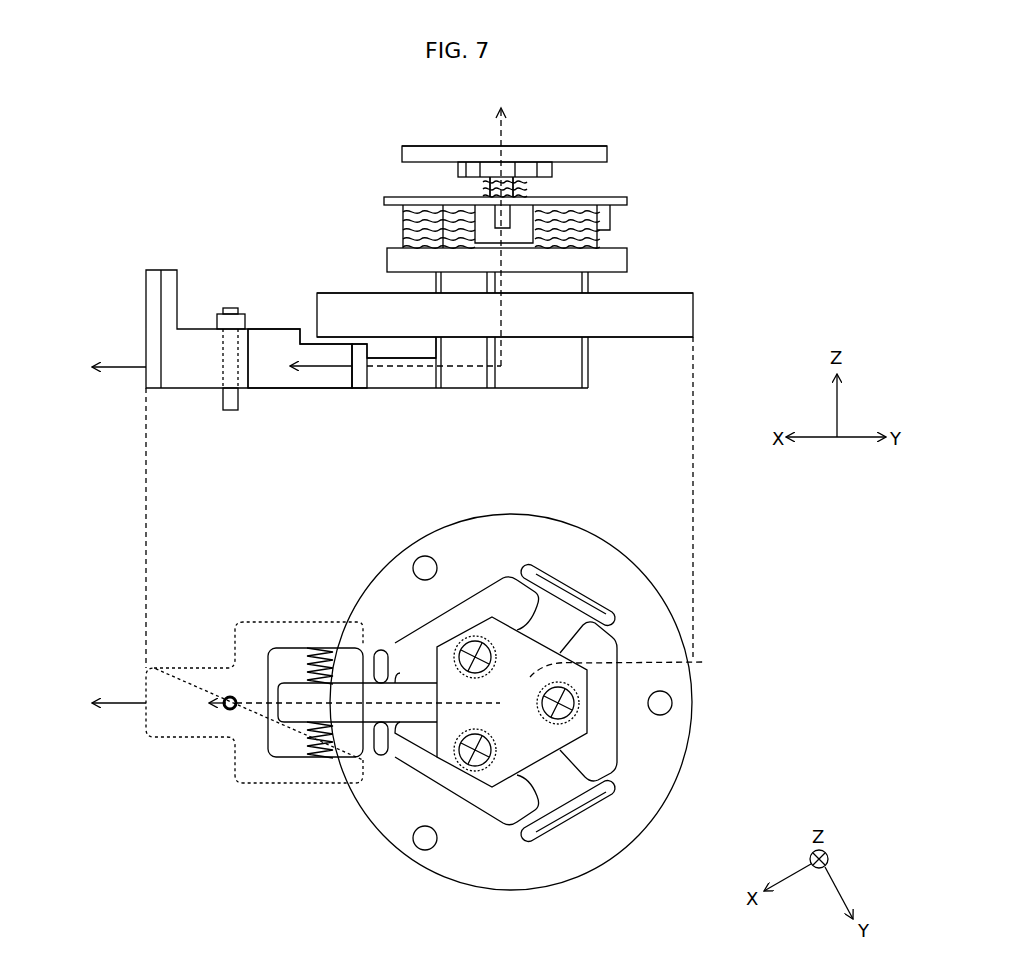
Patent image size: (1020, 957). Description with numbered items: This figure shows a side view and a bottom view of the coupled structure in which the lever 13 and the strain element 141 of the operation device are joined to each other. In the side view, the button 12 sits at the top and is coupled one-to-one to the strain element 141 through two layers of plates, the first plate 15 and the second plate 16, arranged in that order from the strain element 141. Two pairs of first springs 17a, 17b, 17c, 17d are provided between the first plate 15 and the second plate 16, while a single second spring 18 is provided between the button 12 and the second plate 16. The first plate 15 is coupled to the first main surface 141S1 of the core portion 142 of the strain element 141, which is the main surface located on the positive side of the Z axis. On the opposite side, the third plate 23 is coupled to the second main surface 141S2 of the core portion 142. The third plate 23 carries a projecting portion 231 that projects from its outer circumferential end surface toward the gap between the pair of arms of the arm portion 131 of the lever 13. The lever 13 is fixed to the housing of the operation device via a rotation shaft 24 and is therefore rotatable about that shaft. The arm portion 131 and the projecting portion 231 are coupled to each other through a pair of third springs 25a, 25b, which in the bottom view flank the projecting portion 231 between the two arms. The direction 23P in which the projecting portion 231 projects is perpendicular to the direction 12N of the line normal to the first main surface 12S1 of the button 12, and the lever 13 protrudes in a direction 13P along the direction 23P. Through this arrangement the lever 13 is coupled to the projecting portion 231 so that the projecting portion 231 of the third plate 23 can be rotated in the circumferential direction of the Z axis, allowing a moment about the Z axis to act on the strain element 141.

The button 12 is at (566, 148).
The first main surface of the button 12S1 is at (426, 146).
The direction of a line normal to the first main surface 12N is at (505, 224).
The second spring 18 is at (496, 178).
The second plate 16 is at (626, 204).
The first plate 15 is at (626, 264).
The first spring 17a is at (450, 211).
The first spring 17b is at (600, 245).
The first spring 17c is at (556, 204).
The first spring 17d is at (412, 240).
The lever 13 is at (169, 270).
The direction of protrusion of the lever 13P is at (96, 536).
The rotation shaft 24 is at (229, 307).
The arm portion 131 is at (298, 388).
The projecting portion 231 is at (402, 388).
The third plate 23 is at (534, 388).
The direction of projection of the projecting portion 23P is at (333, 536).
The strain element 141 is at (693, 319).
The first main surface of the core portion 141S1 is at (663, 293).
The second main surface of the core portion 141S2 is at (663, 337).
The core portion 142 is at (705, 662).
The third spring 25a is at (312, 742).
The third spring 25b is at (344, 650).